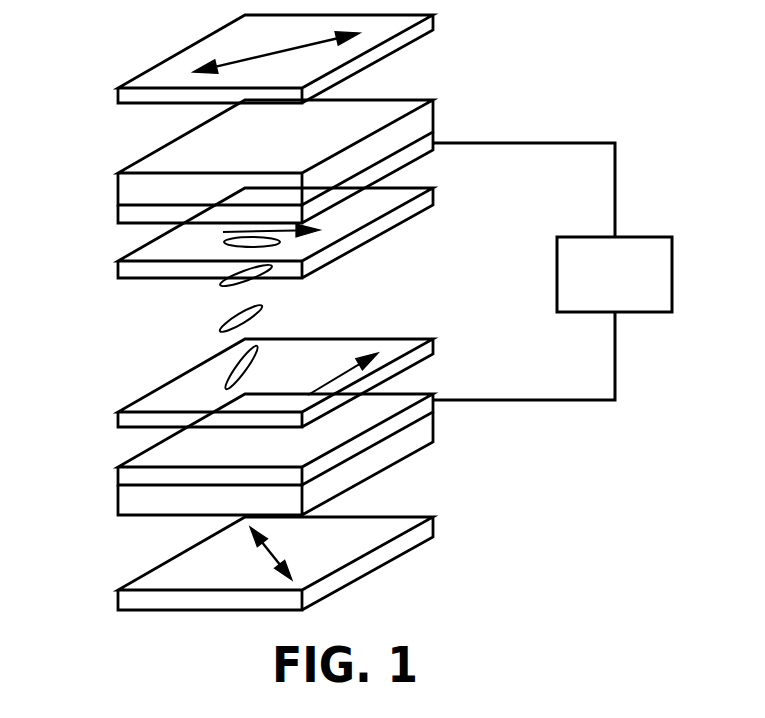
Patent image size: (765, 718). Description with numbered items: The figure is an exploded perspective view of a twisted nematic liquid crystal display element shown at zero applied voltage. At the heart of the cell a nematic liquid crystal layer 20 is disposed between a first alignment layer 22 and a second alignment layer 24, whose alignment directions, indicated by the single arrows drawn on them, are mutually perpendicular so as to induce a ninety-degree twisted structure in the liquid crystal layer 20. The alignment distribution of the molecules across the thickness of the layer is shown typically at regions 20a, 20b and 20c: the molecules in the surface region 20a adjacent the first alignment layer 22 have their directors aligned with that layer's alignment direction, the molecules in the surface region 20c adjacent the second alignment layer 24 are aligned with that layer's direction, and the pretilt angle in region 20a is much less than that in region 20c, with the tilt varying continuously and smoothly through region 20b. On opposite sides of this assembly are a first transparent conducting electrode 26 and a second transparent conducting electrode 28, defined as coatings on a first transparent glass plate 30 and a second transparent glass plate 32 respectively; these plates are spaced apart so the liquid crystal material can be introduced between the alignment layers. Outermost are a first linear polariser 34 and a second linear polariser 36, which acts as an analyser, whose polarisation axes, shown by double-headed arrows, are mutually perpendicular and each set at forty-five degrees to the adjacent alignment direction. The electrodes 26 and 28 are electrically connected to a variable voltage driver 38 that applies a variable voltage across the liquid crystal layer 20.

The nematic liquid crystal layer 20 is at (277, 309).
The surface region 20a is at (225, 243).
The region 20b is at (222, 286).
The surface region 20c is at (225, 384).
The first alignment layer 22 is at (125, 268).
The second alignment layer 24 is at (435, 347).
The first transparent conducting electrode 26 is at (125, 213).
The second transparent conducting electrode 28 is at (125, 478).
The first transparent glass plate 30 is at (422, 122).
The second transparent glass plate 32 is at (417, 437).
The first linear polariser 34 is at (428, 25).
The second linear polariser 36 is at (415, 538).
The variable voltage driver 38 is at (620, 289).